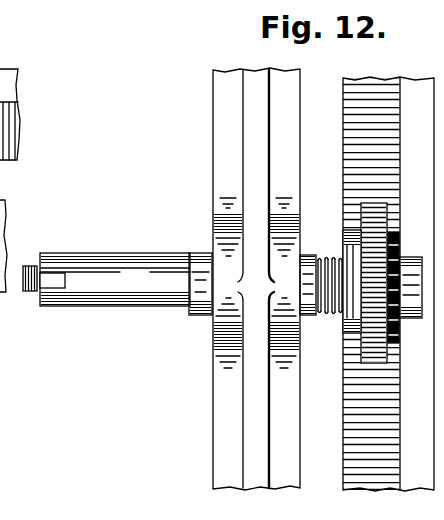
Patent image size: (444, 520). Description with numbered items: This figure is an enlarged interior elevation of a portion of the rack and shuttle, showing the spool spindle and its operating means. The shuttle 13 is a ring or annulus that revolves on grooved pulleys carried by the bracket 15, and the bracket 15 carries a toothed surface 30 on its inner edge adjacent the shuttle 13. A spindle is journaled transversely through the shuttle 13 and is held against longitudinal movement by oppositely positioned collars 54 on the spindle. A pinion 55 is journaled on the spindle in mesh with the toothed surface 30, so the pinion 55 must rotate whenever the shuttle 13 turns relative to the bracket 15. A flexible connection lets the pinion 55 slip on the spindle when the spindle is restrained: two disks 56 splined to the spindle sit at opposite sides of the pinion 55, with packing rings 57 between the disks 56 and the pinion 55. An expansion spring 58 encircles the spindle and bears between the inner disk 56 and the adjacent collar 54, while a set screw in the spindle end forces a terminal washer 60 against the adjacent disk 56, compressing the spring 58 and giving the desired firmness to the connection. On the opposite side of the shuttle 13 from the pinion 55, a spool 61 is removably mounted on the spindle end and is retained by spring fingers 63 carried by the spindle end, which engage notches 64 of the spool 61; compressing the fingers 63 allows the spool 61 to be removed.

The shuttle 13 is at (220, 137).
The bracket 15 is at (411, 86).
The toothed surface 30 is at (352, 413).
The collars 54 is at (208, 318).
The pinion 55 is at (387, 347).
The disks 56 is at (345, 223).
The packing rings 57 is at (345, 323).
The expansion spring 58 is at (327, 256).
The terminal washer 60 is at (403, 262).
The spool 61 is at (97, 262).
The spring fingers 63 is at (27, 292).
The notches 64 is at (58, 289).